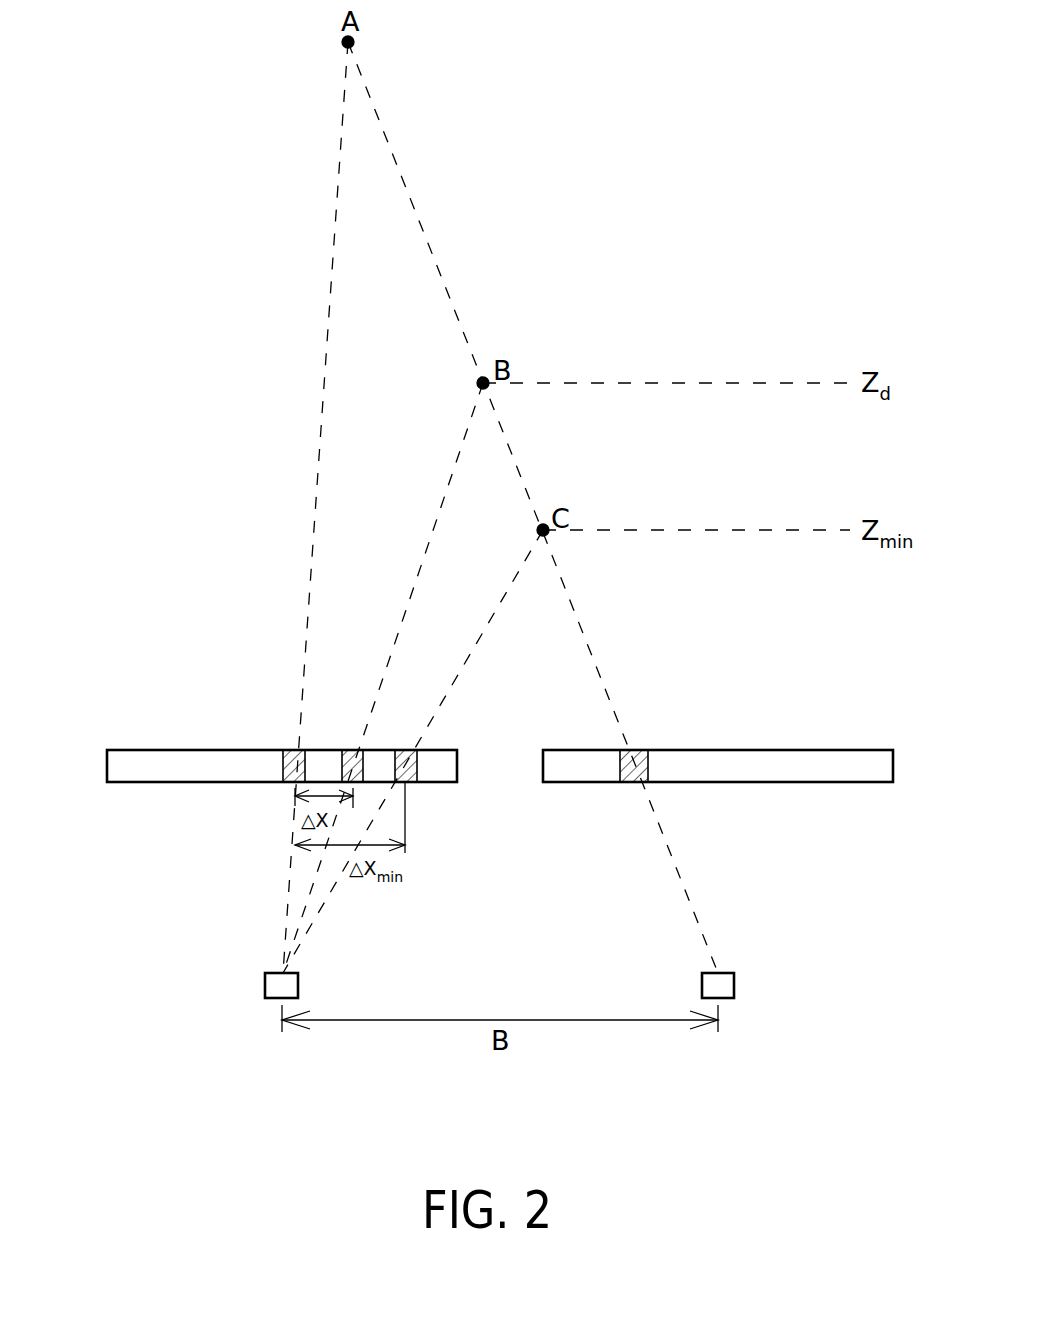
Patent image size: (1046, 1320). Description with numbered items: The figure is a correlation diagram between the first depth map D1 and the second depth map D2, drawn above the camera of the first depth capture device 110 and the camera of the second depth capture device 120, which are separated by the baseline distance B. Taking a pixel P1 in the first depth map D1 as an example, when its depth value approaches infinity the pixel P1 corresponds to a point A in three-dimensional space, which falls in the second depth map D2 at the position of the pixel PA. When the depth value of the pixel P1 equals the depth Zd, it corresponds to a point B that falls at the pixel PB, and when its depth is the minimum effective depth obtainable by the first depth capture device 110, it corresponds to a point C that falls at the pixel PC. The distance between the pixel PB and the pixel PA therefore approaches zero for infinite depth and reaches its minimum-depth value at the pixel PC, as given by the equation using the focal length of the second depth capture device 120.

The first depth capture device 110 is at (734, 988).
The second depth capture device 120 is at (265, 988).
The first depth map D1 is at (852, 750).
The second depth map D2 is at (150, 749).
The pixel P1 is at (643, 750).
The pixel PA is at (290, 750).
The pixel PB is at (353, 750).
The pixel PC is at (400, 750).